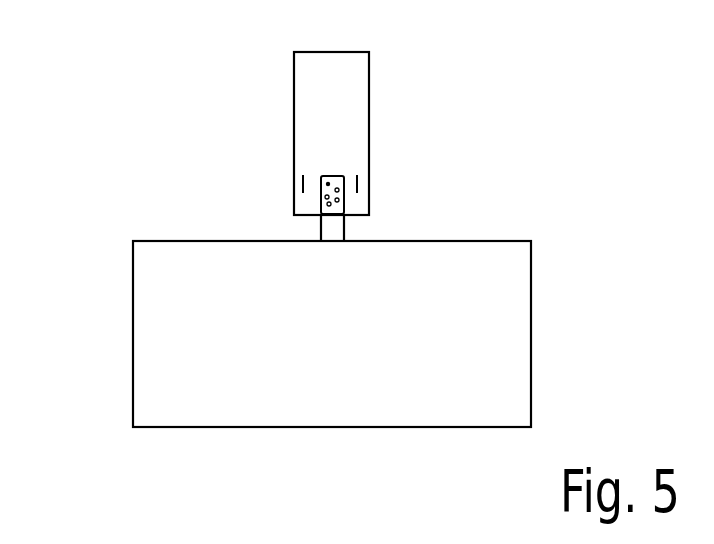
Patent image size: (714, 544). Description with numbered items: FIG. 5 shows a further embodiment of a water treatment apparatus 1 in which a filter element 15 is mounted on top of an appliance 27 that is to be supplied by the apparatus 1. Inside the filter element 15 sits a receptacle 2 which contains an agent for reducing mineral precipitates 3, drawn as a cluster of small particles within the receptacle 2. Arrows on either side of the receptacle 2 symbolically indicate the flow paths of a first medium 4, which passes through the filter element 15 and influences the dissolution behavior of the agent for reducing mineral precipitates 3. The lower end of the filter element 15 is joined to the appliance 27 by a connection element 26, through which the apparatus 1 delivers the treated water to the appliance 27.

The water treatment apparatus 1 is at (478, 108).
The second receptacle 2 is at (333, 177).
The agent for reducing mineral precipitates 3 is at (328, 184).
The first medium 4 is at (316, 196).
The filter element 15 is at (316, 96).
The connection element 26 is at (351, 229).
The appliance 27 is at (546, 317).